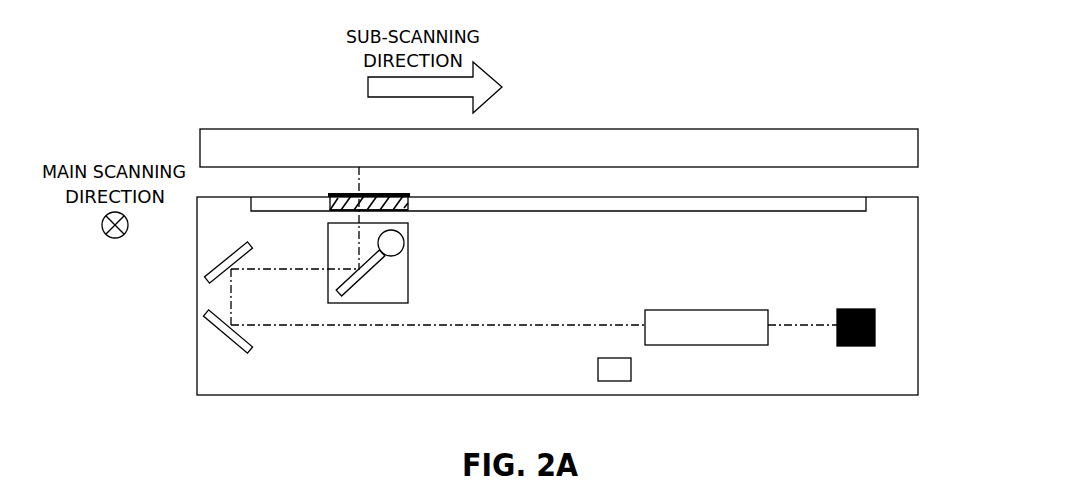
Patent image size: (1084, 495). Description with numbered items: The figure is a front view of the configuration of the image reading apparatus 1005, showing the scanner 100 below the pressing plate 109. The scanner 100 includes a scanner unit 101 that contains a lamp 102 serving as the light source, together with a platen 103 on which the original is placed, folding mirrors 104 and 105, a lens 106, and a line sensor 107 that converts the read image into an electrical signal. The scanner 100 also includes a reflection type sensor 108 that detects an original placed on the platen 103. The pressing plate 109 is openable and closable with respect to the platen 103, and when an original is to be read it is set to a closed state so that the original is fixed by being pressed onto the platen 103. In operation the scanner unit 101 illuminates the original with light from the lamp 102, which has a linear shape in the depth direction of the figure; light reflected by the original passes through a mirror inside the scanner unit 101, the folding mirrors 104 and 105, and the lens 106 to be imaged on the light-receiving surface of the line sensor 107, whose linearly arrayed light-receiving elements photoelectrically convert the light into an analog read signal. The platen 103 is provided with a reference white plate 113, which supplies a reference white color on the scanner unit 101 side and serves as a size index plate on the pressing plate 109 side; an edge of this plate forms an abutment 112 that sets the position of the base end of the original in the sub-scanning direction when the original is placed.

The image reading apparatus 1005 is at (732, 41).
The scanner 100 is at (918, 223).
The scanner unit 101 is at (408, 285).
The lamp 102 is at (404, 243).
The platen 103 is at (662, 211).
The folding mirror 104 is at (230, 249).
The folding mirror 105 is at (249, 349).
The lens 106 is at (708, 310).
The line sensor 107 is at (857, 309).
The reflection type sensor 108 is at (598, 370).
The pressing plate 109 is at (825, 128).
The abutment 112 is at (408, 193).
The reference white plate 113 is at (407, 212).